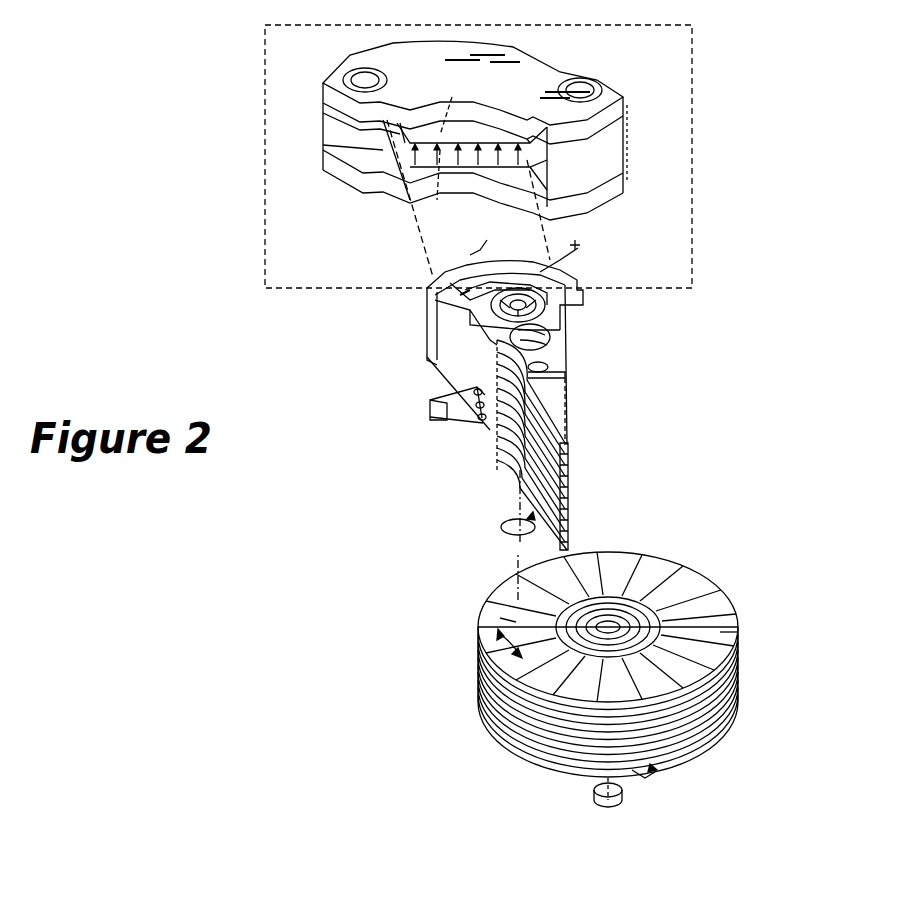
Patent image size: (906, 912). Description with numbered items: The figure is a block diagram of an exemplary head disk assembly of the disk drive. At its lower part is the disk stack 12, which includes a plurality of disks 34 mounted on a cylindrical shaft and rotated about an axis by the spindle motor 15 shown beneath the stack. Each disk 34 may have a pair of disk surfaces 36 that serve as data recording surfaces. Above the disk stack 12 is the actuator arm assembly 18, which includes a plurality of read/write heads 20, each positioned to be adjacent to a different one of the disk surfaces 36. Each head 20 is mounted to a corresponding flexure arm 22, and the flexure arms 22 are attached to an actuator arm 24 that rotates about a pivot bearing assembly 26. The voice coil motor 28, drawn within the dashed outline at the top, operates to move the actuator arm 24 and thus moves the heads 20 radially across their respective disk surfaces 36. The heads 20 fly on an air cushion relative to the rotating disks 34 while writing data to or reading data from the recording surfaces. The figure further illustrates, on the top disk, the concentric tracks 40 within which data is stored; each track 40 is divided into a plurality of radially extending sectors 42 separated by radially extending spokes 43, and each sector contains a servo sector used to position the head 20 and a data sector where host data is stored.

The disk stack 12 is at (492, 558).
The spindle motor 15 is at (594, 798).
The actuator arm assembly 18 is at (668, 353).
The read/write head 20 is at (567, 445).
The flexure arm 22 is at (563, 405).
The actuator arm 24 is at (557, 350).
The pivot bearing assembly 26 is at (538, 305).
The voice coil motor 28 is at (693, 145).
The disks 34 is at (658, 778).
The disk surfaces 36 is at (722, 636).
The tracks 40 is at (621, 548).
The sectors 42 is at (505, 640).
The spokes 43 is at (516, 622).